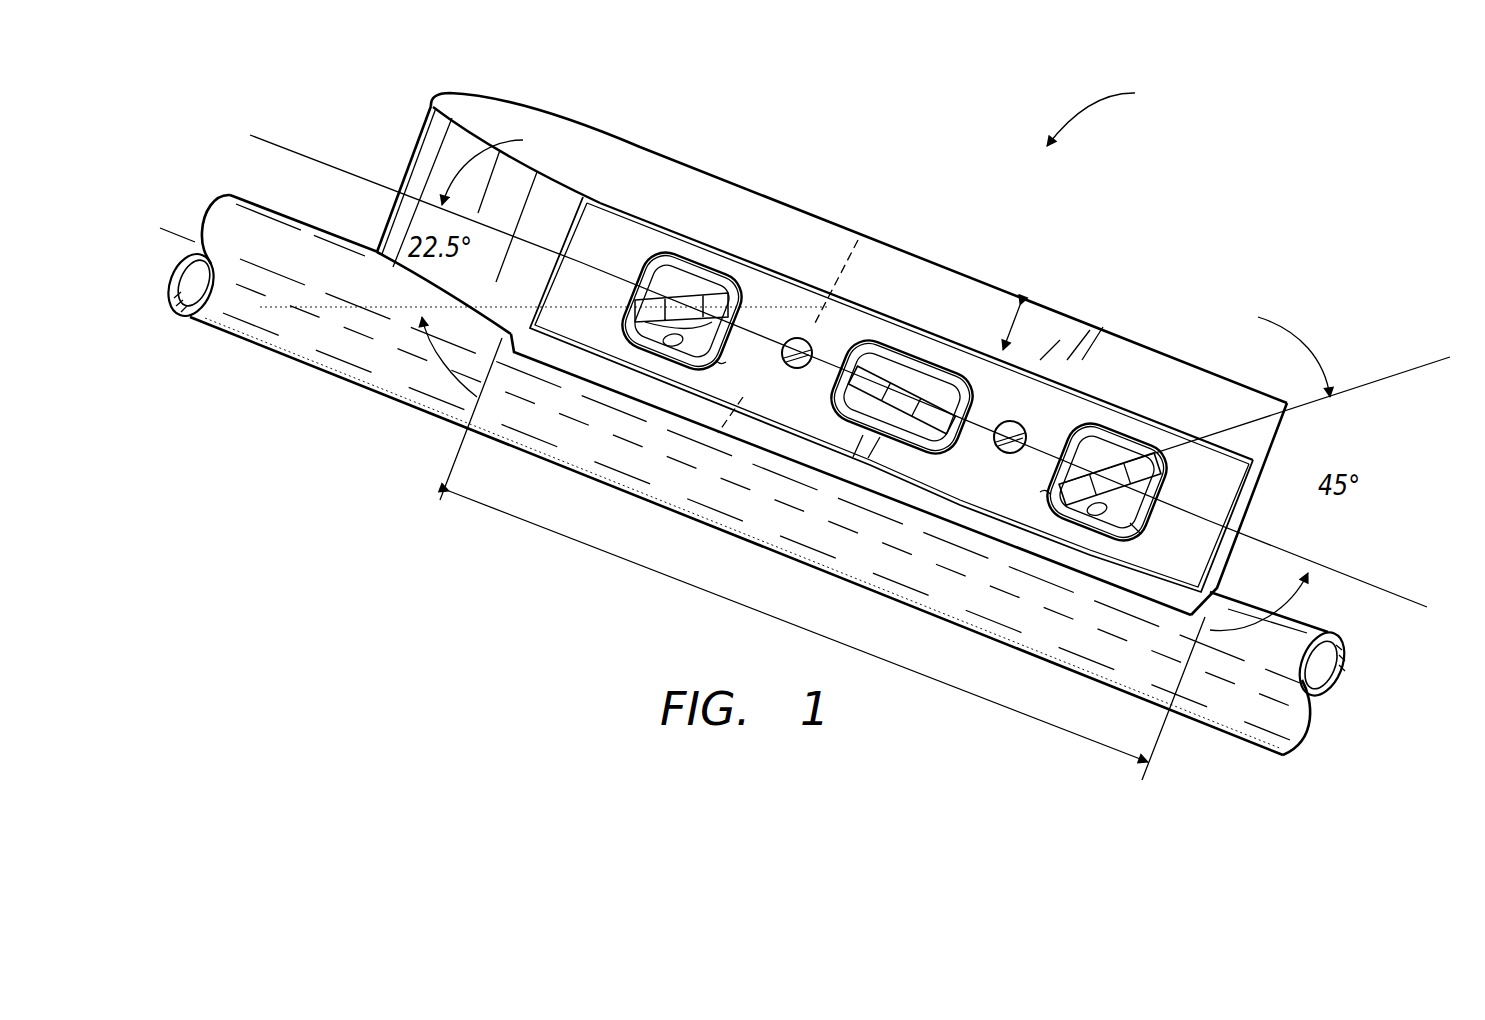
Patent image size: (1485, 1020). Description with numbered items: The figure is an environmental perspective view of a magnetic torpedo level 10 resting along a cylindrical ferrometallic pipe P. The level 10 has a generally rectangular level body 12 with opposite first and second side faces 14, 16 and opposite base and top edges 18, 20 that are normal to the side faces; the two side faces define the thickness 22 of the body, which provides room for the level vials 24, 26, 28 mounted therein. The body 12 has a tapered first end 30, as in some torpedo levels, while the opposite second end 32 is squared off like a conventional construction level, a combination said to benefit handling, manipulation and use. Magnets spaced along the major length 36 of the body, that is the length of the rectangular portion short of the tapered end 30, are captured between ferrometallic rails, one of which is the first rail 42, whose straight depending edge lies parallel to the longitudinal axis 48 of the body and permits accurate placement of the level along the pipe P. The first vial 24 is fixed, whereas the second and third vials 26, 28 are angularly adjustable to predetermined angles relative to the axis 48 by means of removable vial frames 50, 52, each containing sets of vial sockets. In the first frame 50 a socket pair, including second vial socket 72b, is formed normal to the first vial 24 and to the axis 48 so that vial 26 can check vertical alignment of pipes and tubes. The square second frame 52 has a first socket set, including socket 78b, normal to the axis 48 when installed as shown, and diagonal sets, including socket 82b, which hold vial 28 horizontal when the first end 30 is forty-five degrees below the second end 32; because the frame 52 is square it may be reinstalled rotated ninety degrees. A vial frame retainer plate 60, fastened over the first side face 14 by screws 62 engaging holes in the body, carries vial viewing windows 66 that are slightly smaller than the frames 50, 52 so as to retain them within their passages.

The magnetic torpedo level 10 is at (1118, 107).
The level body 12 is at (707, 173).
The first side face 14 is at (547, 200).
The second side face 16 is at (862, 238).
The base edge 18 is at (718, 433).
The top edge 20 is at (917, 285).
The thickness 22 is at (1013, 328).
The first level vial 24 is at (900, 387).
The second level vial 26 is at (680, 278).
The third level vial 28 is at (1100, 470).
The tapered first end 30 is at (468, 95).
The second end 32 is at (1287, 412).
The major length 36 is at (637, 564).
The first rail 42 is at (570, 374).
The longitudinal axis 48 is at (343, 172).
The first removable level vial frame 50 is at (640, 266).
The second removable level vial frame 52 is at (1170, 481).
The vial frame retainer plate 60 is at (1034, 411).
The screws 62 is at (797, 370).
The vial viewing windows 66 is at (718, 362).
The second vial socket 72b is at (667, 337).
The vial socket 78b is at (1093, 513).
The vial socket 82b is at (1131, 525).
The ferrometallic pipe P is at (340, 400).